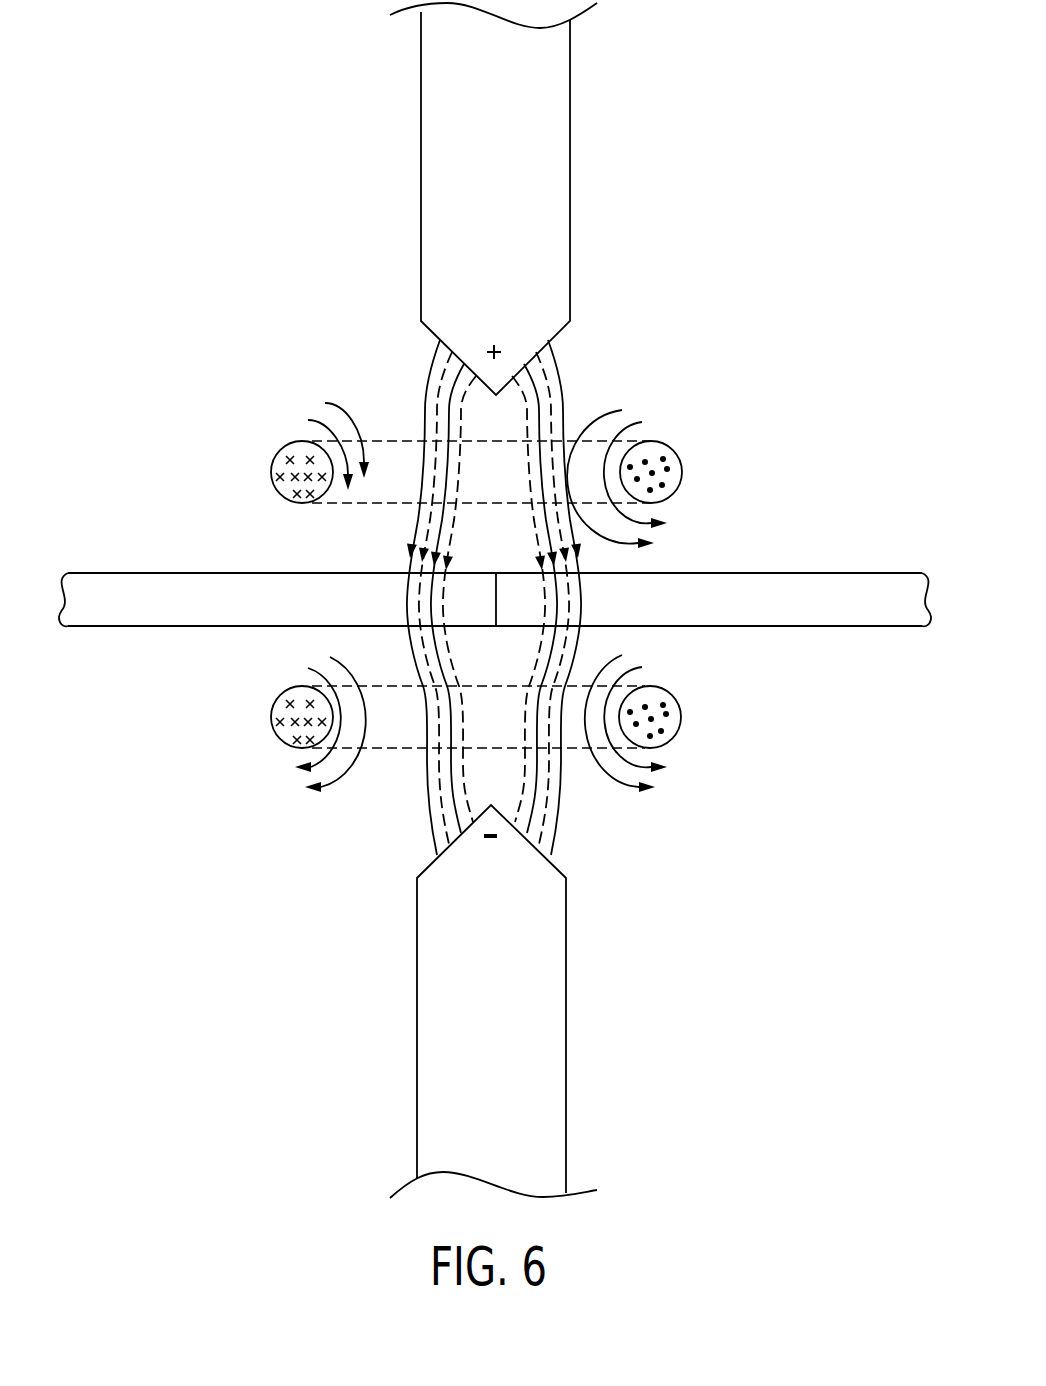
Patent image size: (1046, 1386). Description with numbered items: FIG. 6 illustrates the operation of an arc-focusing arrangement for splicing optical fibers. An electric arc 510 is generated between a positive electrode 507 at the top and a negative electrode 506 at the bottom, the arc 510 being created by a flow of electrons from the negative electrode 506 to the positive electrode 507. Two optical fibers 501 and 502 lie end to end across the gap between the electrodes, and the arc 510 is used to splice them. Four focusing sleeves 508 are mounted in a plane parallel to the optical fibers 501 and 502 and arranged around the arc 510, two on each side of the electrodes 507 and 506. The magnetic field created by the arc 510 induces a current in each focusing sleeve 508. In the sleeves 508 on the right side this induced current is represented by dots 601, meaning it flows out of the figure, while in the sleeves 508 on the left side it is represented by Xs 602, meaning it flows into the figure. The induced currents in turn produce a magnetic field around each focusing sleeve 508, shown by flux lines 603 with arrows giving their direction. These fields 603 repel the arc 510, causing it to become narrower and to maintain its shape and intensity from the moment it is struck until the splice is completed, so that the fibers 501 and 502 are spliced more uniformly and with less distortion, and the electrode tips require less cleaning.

The optical fiber 501 is at (192, 572).
The optical fiber 502 is at (788, 595).
The negative electrode 506 is at (555, 1046).
The positive electrode 507 is at (570, 176).
The focusing sleeve 508 is at (298, 441).
The electric arc 510 is at (580, 568).
The dots 601 is at (668, 470).
The Xs 602 is at (290, 460).
The magnetic field flux lines 603 is at (342, 405).